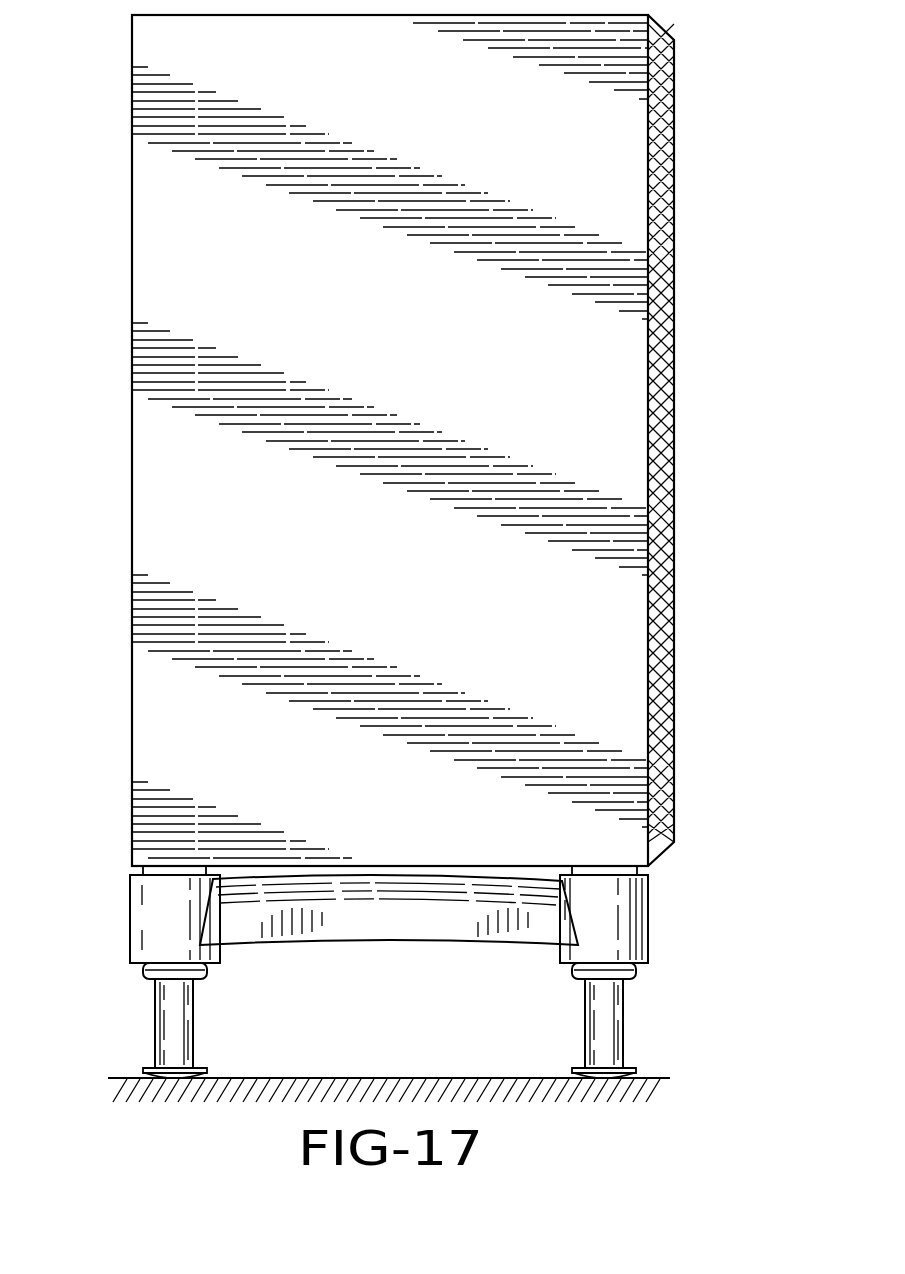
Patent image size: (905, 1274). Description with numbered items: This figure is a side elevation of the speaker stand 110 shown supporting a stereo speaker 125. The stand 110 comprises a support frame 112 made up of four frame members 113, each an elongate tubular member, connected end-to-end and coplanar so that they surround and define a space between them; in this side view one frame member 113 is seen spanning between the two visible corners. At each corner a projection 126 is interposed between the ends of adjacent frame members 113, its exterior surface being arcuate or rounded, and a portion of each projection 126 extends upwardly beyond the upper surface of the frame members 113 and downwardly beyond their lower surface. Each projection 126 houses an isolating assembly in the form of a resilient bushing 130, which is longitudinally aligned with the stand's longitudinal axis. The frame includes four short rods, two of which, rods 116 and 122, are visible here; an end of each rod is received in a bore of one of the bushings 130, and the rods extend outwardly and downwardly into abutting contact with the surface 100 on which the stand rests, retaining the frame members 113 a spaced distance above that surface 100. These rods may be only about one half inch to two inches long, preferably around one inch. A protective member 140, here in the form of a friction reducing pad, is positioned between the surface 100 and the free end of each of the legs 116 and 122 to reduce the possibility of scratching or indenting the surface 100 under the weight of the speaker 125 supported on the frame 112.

The surface 100 is at (408, 1078).
The speaker stand 110 is at (652, 986).
The support frame 112 is at (657, 945).
The frame member 113 is at (386, 925).
The rod 116 is at (178, 1026).
The rod 122 is at (598, 1020).
The stereo speaker 125 is at (170, 490).
The projection 126 is at (142, 922).
The resilient bushing 130 is at (607, 862).
The protective member 140 is at (150, 1068).